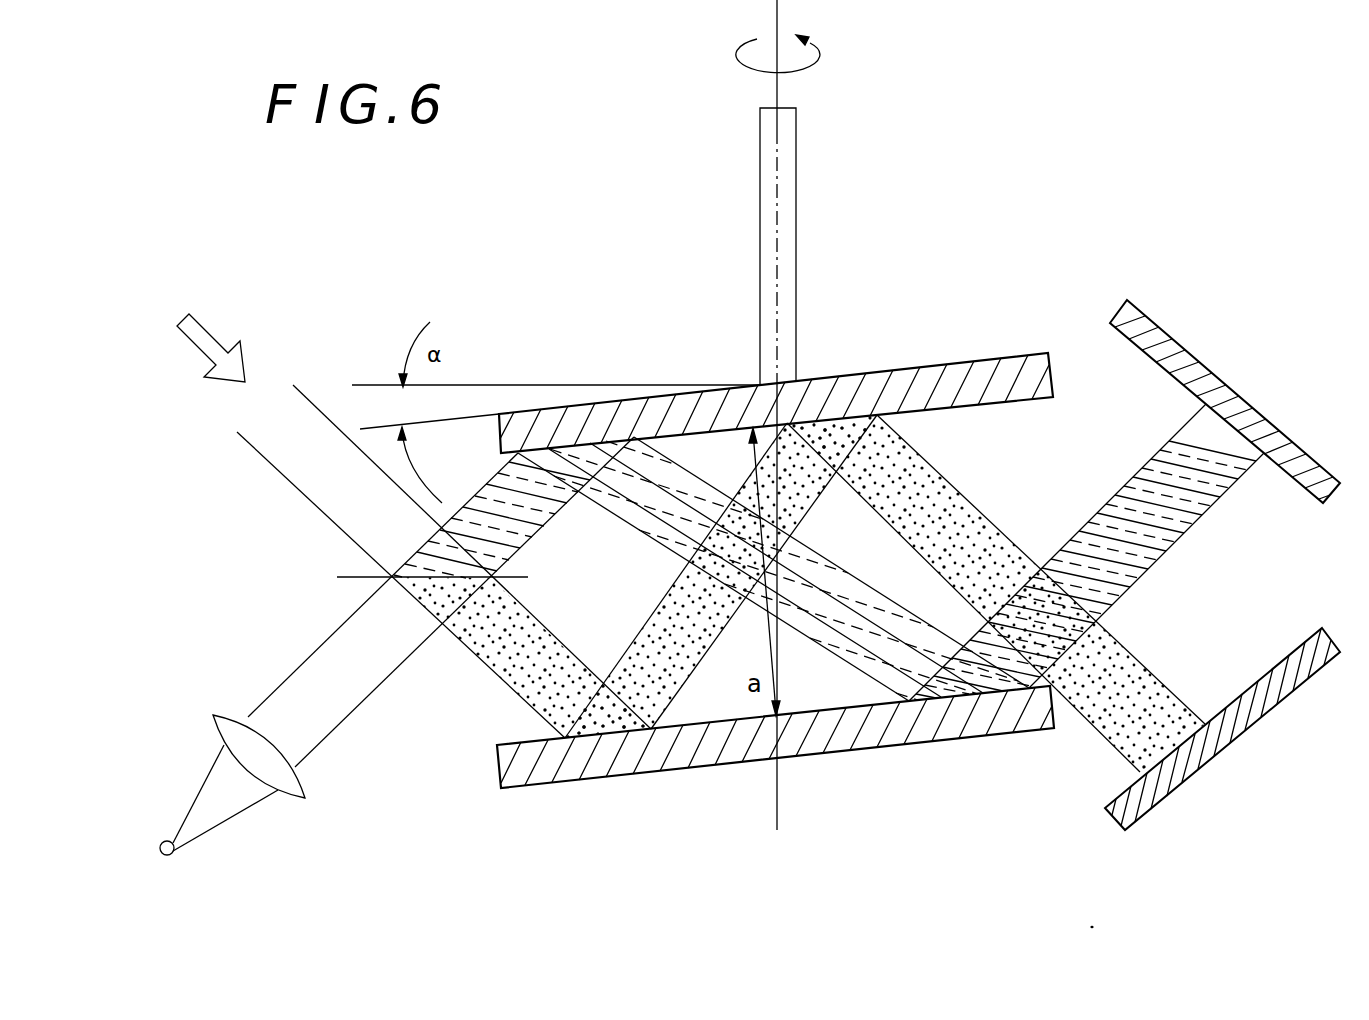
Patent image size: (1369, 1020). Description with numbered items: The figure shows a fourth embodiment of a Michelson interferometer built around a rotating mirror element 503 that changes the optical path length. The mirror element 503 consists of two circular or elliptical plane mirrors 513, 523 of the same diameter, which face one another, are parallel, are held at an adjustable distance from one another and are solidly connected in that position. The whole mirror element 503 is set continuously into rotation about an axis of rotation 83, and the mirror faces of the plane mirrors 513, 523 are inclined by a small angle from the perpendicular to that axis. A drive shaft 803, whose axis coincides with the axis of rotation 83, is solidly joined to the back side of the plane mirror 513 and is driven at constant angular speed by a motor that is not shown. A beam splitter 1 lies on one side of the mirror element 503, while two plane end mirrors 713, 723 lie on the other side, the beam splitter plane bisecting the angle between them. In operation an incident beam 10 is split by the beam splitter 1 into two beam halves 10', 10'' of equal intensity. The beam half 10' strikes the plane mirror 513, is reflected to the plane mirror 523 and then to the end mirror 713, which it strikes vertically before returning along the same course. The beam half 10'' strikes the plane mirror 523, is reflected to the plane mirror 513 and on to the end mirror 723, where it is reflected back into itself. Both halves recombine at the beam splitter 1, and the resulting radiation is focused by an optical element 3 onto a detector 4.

The incident beam 10 is at (524, 526).
The beam splitter 1 is at (357, 577).
The optical element 3 is at (225, 728).
The detector 4 is at (175, 852).
The plane mirror 513 is at (942, 368).
The plane mirror 523 is at (590, 765).
The mirror element 503 is at (784, 569).
The drive shaft 803 is at (797, 270).
The axis of rotation 83 is at (779, 96).
The plane end mirror 713 is at (1227, 380).
The plane end mirror 723 is at (1233, 742).
The beam half 10' is at (1086, 552).
The beam half 10'' is at (996, 604).